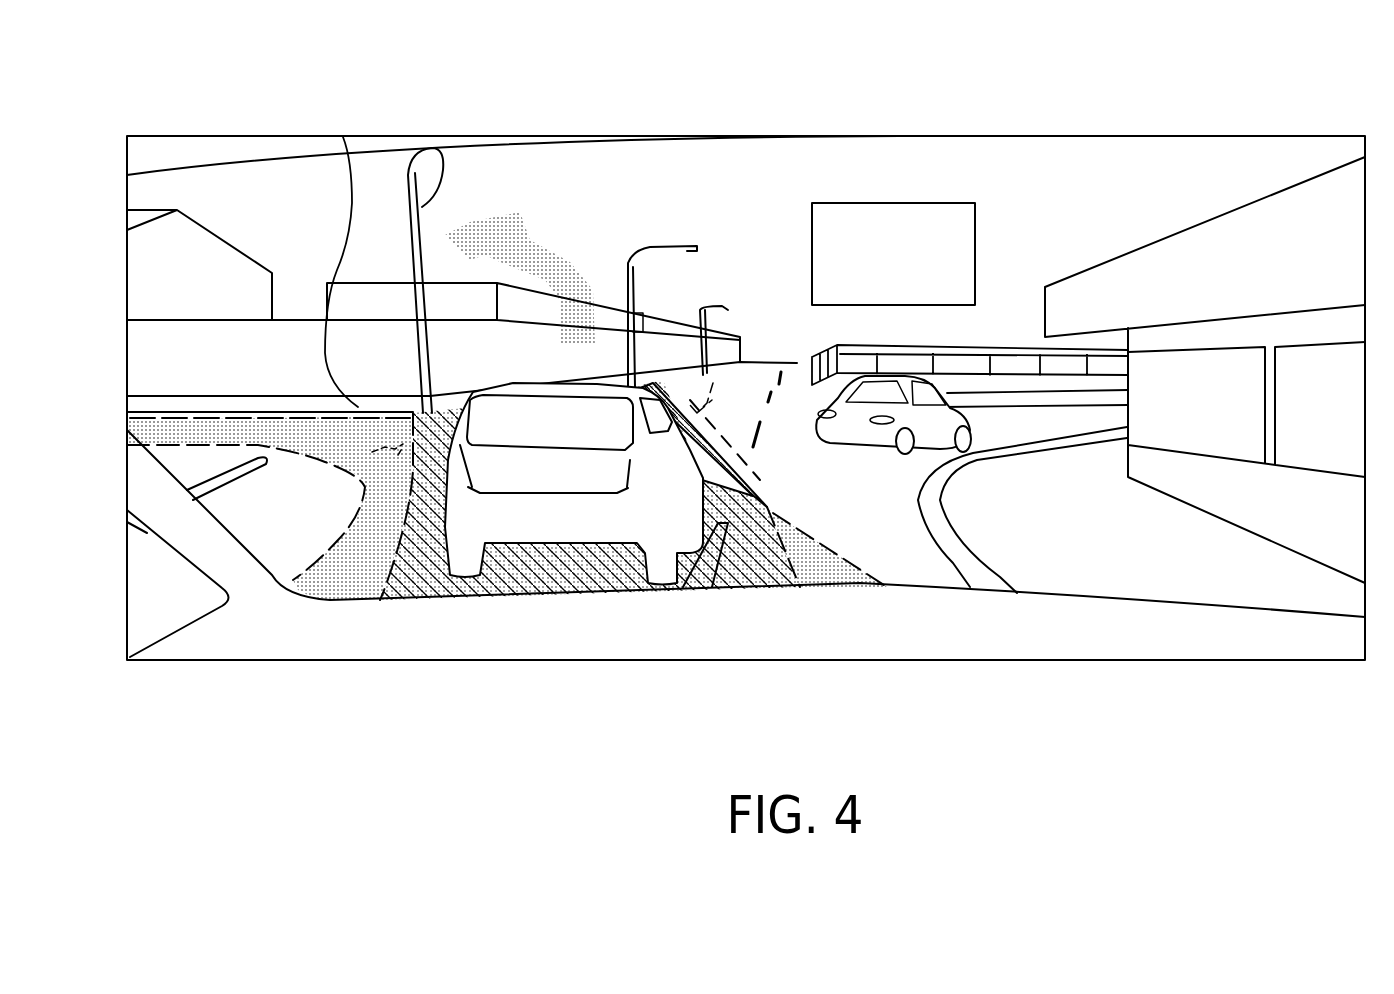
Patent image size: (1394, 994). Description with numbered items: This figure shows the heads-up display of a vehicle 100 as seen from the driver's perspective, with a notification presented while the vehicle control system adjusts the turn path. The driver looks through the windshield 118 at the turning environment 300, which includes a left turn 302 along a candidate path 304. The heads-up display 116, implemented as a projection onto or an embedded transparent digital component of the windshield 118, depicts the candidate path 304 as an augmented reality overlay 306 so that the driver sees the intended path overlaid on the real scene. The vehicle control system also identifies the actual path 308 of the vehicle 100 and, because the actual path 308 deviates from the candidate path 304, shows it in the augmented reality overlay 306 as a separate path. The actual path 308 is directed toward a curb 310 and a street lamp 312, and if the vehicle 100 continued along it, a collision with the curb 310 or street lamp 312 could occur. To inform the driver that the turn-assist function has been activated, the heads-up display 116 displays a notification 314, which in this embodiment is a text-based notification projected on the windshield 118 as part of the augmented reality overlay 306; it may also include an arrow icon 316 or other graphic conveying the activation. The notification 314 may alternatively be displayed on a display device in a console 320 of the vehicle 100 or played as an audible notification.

The vehicle 100 is at (1308, 633).
The heads-up display 116 is at (835, 612).
The windshield 118 is at (263, 532).
The turning environment 300 is at (833, 165).
The left turn 302 is at (155, 364).
The candidate path 304 is at (160, 433).
The augmented reality overlay 306 is at (754, 585).
The actual path 308 is at (716, 375).
The curb 310 is at (343, 137).
The street lamp 312 is at (441, 150).
The notification 314 is at (927, 202).
The arrow icon 316 is at (487, 222).
The console 320 is at (392, 650).